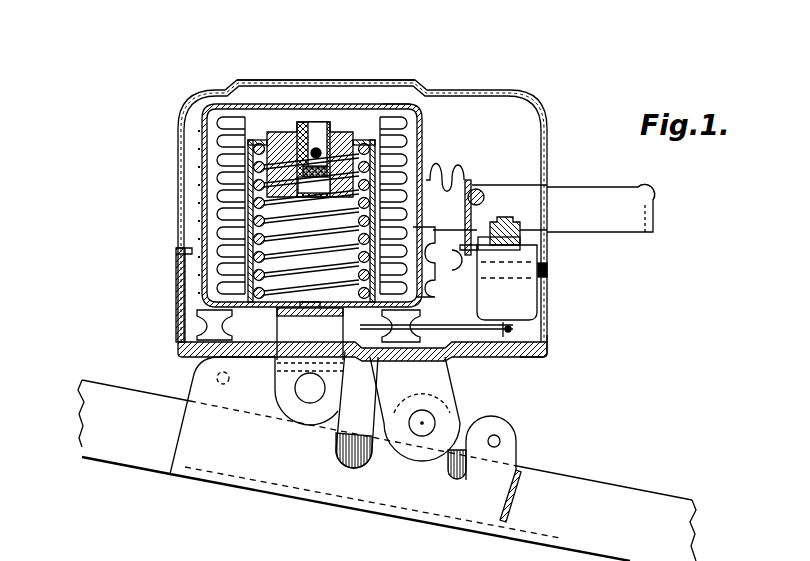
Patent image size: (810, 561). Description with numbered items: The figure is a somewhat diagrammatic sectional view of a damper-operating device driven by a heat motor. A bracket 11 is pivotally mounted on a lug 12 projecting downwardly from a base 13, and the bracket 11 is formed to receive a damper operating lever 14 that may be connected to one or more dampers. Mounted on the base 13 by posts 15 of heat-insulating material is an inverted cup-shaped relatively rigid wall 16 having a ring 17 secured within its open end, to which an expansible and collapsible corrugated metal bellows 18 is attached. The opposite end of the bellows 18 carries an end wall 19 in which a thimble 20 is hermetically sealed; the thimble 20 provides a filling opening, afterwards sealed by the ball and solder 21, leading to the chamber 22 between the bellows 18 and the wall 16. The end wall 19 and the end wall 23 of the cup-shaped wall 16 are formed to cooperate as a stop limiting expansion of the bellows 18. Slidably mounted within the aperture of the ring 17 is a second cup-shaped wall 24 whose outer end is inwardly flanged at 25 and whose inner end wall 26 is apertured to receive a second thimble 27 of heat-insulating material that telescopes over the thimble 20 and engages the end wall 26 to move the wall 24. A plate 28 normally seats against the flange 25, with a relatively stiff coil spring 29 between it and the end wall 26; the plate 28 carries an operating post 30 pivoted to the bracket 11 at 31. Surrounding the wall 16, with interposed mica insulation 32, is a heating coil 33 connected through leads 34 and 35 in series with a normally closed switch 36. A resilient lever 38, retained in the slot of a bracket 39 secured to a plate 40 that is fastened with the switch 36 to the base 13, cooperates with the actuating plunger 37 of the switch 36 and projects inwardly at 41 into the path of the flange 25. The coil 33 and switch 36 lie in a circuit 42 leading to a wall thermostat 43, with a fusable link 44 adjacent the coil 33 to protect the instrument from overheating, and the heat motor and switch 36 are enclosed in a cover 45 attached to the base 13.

The bracket 11 is at (396, 504).
The lug 12 is at (442, 381).
The base 13 is at (543, 336).
The damper operating lever 14 is at (620, 495).
The posts 15 is at (205, 325).
The cup-shaped wall 16 is at (423, 122).
The ring 17 is at (213, 291).
The bellows 18 is at (213, 207).
The end wall 19 is at (388, 105).
The thimble 20 is at (352, 130).
The ball and solder 21 is at (295, 125).
The chamber 22 is at (215, 110).
The end wall 23 is at (313, 148).
The second cup-shaped wall 24 is at (383, 213).
The flange 25 is at (231, 326).
The inner end wall 26 is at (374, 84).
The second thimble 27 is at (268, 148).
The plate 28 is at (333, 308).
The coil spring 29 is at (386, 180).
The operating post 30 is at (288, 380).
The pivot 31 is at (312, 392).
The insulation 32 is at (202, 167).
The heating coil 33 is at (197, 232).
The lead 34 is at (468, 185).
The lead 35 is at (472, 232).
The switch 36 is at (527, 290).
The actuating plunger 37 is at (509, 332).
The resilient lever 38 is at (418, 338).
The bracket 39 is at (466, 306).
The plate 40 is at (478, 228).
The inward projection 41 is at (398, 350).
The circuit 42 is at (598, 186).
The thermostat 43 is at (652, 197).
The fusable link 44 is at (464, 174).
The cover 45 is at (487, 89).